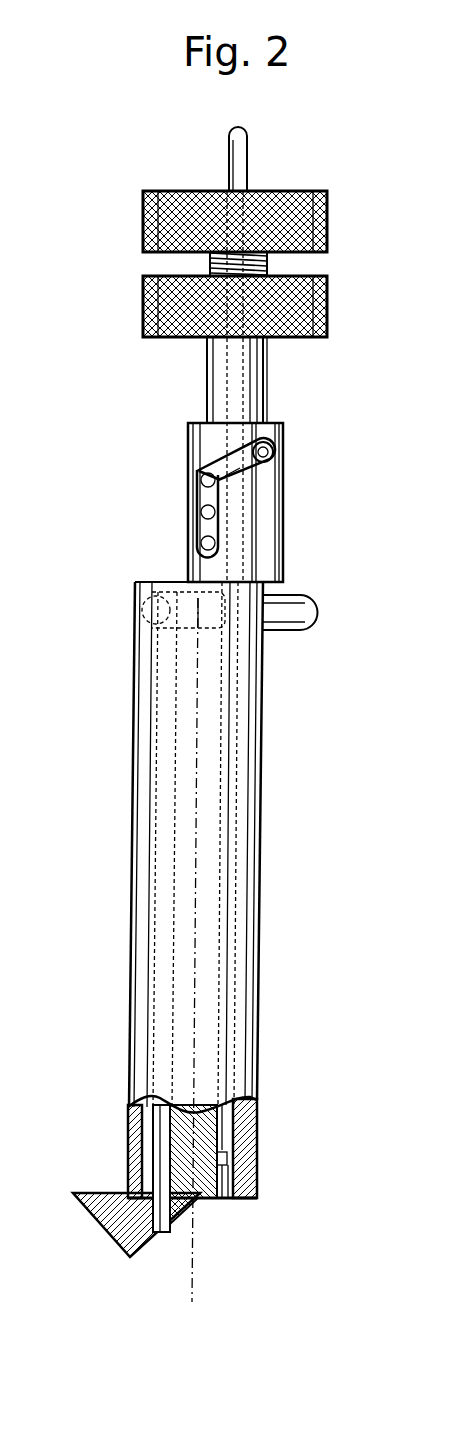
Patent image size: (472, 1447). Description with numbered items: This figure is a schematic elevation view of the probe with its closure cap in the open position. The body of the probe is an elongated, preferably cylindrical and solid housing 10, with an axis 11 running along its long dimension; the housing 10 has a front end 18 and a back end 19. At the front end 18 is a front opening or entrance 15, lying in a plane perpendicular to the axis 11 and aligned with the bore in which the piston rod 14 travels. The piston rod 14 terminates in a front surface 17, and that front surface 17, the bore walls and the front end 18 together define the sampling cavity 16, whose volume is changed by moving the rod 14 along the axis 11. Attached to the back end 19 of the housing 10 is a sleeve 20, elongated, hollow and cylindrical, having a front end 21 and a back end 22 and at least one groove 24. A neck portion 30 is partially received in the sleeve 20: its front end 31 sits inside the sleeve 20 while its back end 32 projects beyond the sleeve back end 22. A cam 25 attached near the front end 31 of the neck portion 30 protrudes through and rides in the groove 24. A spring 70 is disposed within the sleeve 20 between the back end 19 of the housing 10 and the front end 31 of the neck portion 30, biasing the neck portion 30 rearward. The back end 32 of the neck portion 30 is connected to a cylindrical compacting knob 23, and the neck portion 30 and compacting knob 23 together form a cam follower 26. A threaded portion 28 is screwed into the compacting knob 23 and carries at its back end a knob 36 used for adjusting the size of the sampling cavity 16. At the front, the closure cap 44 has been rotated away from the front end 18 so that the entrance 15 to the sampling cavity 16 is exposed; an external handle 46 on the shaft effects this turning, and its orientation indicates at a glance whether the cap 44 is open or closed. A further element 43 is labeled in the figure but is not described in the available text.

The piston rod 14 is at (236, 158).
The knob 36 is at (328, 212).
The threaded portion 28 is at (210, 262).
The compacting knob 23 is at (328, 296).
The cam follower 26 is at (329, 341).
The back end of neck portion 32 is at (217, 340).
The back end of sleeve 22 is at (218, 420).
The neck portion 30 is at (257, 382).
The sleeve 20 is at (265, 500).
The groove 24 is at (203, 514).
The spring 70 is at (205, 553).
The front end of neck portion 31 is at (197, 470).
The cam 25 is at (274, 455).
The front end of sleeve 21 is at (188, 576).
The housing 10 is at (149, 716).
The axis 11 is at (199, 700).
The back end of housing 19 is at (252, 590).
The external handle 46 is at (318, 612).
The front surface 17 is at (228, 1165).
The front end of housing 18 is at (207, 1198).
The entrance 15 is at (230, 1198).
The closure cap 44 is at (110, 1223).
The sampling cavity 16 is at (160, 1165).
The blade 43 is at (158, 1233).